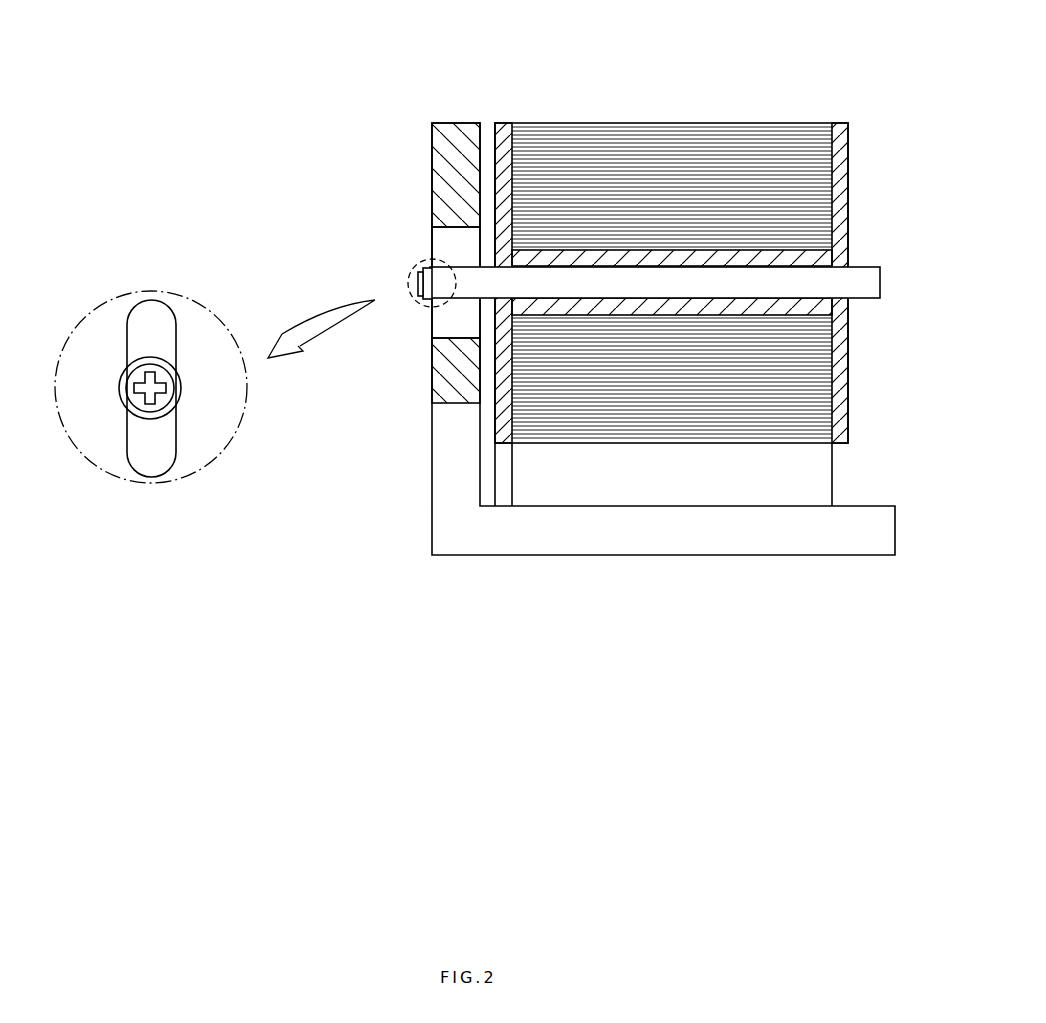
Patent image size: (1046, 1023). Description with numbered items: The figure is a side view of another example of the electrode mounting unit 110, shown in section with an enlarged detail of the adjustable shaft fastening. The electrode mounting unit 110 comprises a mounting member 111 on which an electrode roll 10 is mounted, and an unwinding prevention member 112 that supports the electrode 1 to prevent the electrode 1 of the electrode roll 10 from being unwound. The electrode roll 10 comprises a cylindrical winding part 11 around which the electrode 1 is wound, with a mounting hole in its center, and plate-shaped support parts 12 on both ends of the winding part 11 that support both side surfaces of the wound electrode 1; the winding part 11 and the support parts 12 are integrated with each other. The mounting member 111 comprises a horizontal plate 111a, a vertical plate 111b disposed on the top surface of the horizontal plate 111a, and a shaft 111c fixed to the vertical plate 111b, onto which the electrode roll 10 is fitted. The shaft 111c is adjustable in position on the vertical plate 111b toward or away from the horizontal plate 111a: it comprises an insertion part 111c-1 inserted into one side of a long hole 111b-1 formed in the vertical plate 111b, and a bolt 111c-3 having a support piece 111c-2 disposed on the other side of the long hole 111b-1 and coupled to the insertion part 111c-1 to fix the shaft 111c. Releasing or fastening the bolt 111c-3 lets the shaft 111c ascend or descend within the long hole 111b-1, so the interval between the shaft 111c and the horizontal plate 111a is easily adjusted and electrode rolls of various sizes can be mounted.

The electrode 1 is at (668, 140).
The electrode roll 10 is at (905, 192).
The winding part 11 is at (798, 250).
The support parts 12 is at (848, 196).
The electrode mounting unit 110 is at (470, 72).
The mounting member 111 is at (358, 318).
The horizontal plate 111a is at (500, 546).
The vertical plate 111b is at (458, 378).
The long hole 111b-1 is at (432, 230).
The shaft 111c is at (512, 294).
The insertion part 111c-1 is at (457, 278).
The support piece 111c-2 is at (425, 265).
The bolt 111c-3 is at (418, 284).
The unwinding prevention member 112 is at (833, 473).